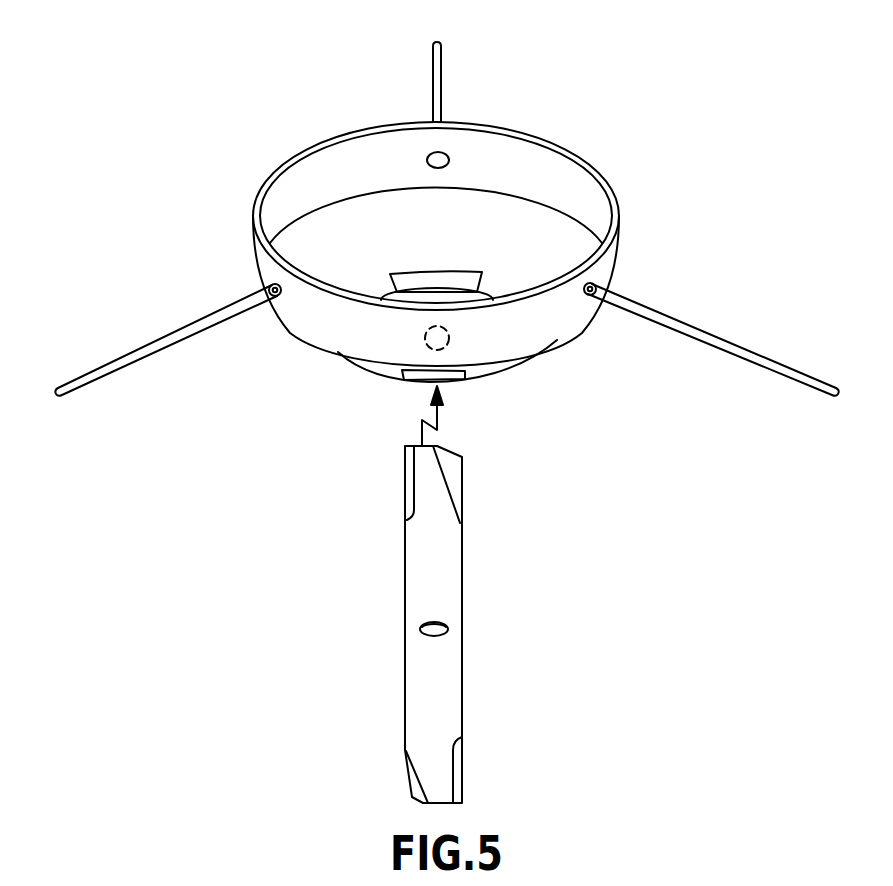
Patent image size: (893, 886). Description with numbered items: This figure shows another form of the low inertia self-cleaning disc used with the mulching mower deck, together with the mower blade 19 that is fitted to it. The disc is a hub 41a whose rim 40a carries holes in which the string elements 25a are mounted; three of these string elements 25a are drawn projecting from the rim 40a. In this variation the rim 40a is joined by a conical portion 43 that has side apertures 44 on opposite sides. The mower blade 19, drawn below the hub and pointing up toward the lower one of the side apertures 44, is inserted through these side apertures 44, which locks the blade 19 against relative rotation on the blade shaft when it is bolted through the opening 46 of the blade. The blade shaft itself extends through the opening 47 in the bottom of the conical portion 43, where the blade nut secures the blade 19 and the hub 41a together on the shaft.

The mower blade 19 is at (442, 670).
The string elements 25a is at (433, 45).
The rim 40a is at (551, 162).
The hub 41a is at (527, 327).
The conical portion 43 is at (353, 257).
The side apertures 44 is at (428, 277).
The opening of the blade 46 is at (422, 626).
The opening in the bottom of the conical portion 47 is at (424, 340).